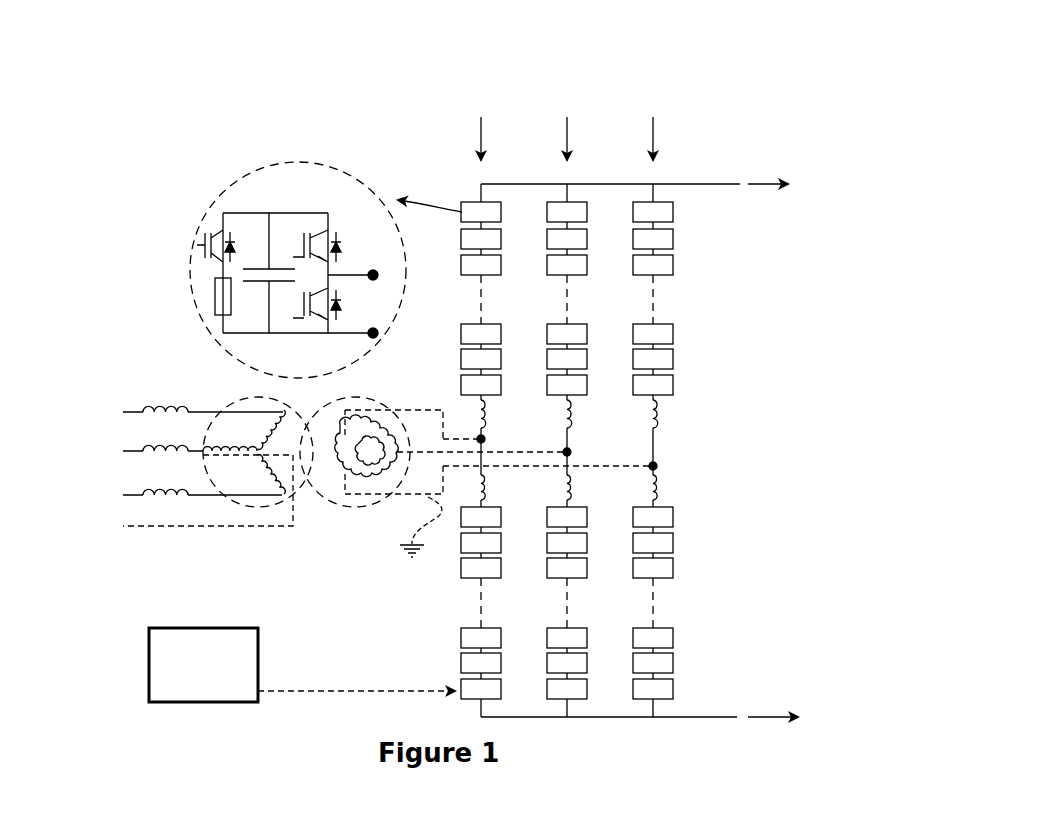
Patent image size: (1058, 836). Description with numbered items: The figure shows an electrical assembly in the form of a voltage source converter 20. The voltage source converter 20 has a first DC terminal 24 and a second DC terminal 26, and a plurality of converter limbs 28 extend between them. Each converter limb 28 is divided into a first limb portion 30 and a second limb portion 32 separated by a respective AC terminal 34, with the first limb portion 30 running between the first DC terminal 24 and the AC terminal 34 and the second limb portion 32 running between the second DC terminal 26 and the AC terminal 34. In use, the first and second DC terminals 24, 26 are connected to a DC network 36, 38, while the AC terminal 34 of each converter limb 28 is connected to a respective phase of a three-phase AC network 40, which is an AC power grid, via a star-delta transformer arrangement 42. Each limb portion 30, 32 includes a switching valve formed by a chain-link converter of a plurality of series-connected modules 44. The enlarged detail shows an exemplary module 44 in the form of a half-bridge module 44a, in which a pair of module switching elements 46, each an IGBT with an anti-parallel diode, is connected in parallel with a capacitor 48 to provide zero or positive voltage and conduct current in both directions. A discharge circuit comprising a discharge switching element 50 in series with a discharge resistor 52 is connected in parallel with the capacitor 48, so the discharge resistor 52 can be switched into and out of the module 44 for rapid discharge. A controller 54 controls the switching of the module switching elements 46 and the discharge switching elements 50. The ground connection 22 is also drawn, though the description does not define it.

The voltage source converter 20 is at (726, 122).
The ground connection 22 is at (409, 570).
The first DC terminal 24 is at (657, 186).
The second DC terminal 26 is at (660, 711).
The converter limb 28 is at (568, 124).
The first limb portion 30 is at (700, 317).
The second limb portion 32 is at (690, 572).
The AC terminal 34 is at (486, 437).
The DC network 36 is at (787, 183).
The DC network 38 is at (791, 717).
The three-phase AC network 40 is at (113, 412).
The star-delta transformer arrangement 42 is at (308, 498).
The module 44 is at (255, 198).
The half-bridge module 44a is at (430, 206).
The module switching element 46 is at (318, 232).
The capacitor 48 is at (267, 300).
The discharge switching element 50 is at (194, 246).
The discharge resistor 52 is at (212, 297).
The controller 54 is at (214, 677).